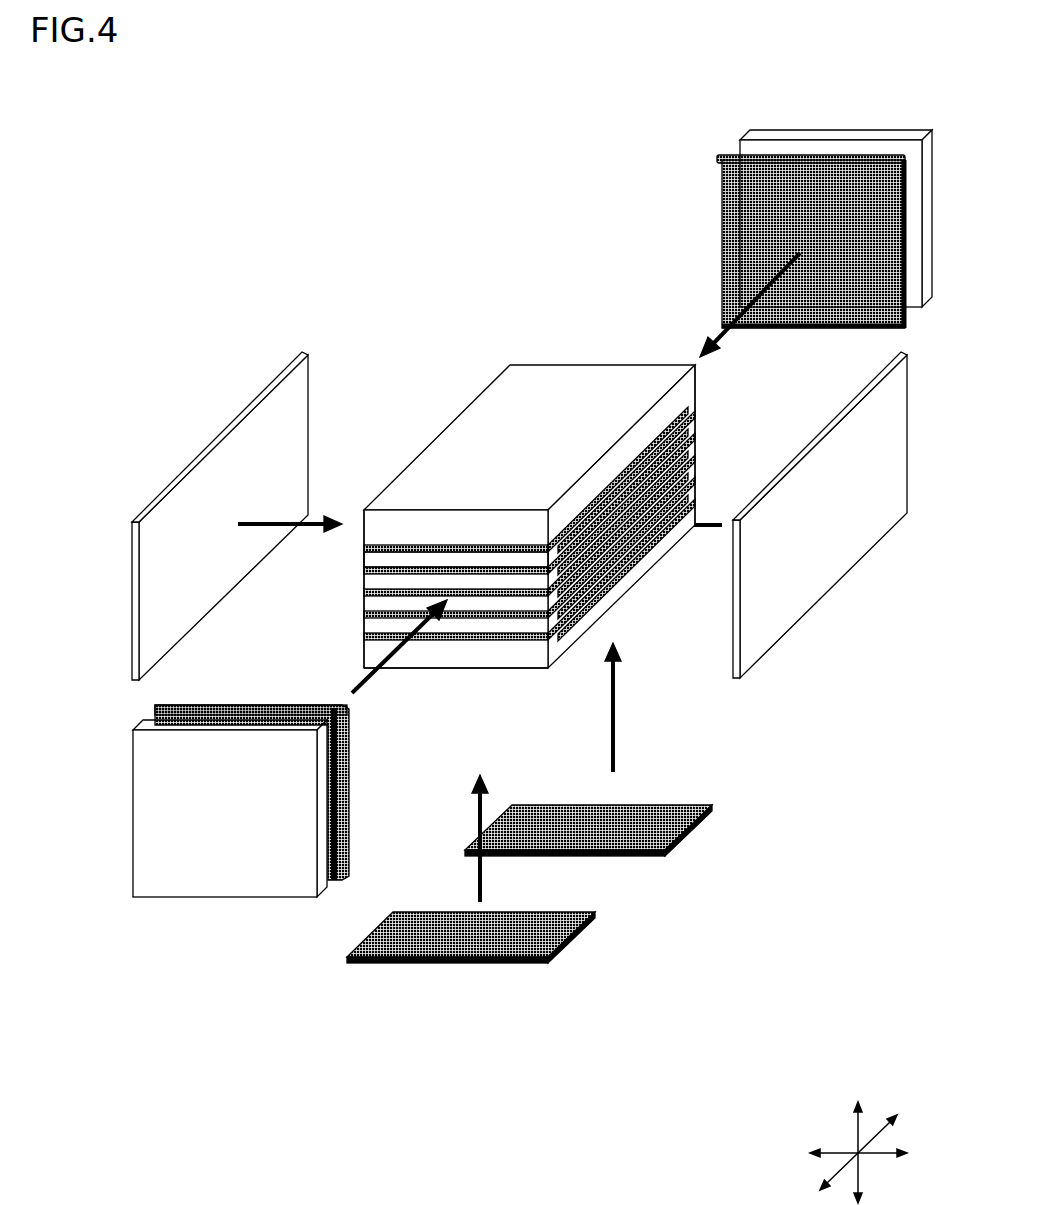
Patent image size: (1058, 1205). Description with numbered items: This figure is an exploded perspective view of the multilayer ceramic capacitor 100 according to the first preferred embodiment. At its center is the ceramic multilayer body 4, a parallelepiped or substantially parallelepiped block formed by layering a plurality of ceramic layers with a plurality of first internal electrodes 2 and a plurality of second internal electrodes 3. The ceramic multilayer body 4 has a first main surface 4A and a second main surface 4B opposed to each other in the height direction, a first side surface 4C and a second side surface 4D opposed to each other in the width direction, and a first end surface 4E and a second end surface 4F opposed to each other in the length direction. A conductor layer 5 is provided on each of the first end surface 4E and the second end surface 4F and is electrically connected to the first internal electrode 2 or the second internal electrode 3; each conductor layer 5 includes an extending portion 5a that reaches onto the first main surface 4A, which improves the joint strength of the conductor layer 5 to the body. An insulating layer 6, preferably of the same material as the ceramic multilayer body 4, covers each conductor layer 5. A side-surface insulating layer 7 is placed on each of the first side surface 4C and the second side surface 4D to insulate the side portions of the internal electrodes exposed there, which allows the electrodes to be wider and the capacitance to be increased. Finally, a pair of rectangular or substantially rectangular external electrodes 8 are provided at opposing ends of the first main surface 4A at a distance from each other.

The multilayer ceramic capacitor 100 is at (257, 98).
The first internal electrode 2 is at (440, 636).
The second internal electrode 3 is at (603, 598).
The ceramic multilayer body 4 is at (548, 493).
The first main surface 4A is at (463, 684).
The second main surface 4B is at (508, 440).
The first side surface 4C is at (712, 452).
The second side surface 4D is at (396, 440).
The first end surface 4E is at (418, 600).
The second end surface 4F is at (622, 352).
The conductor layer 5 is at (473, 476).
The extending portion 5a is at (742, 153).
The insulating layer 6 is at (832, 133).
The side-surface insulating layer 7 is at (218, 438).
The external electrode 8 is at (650, 830).